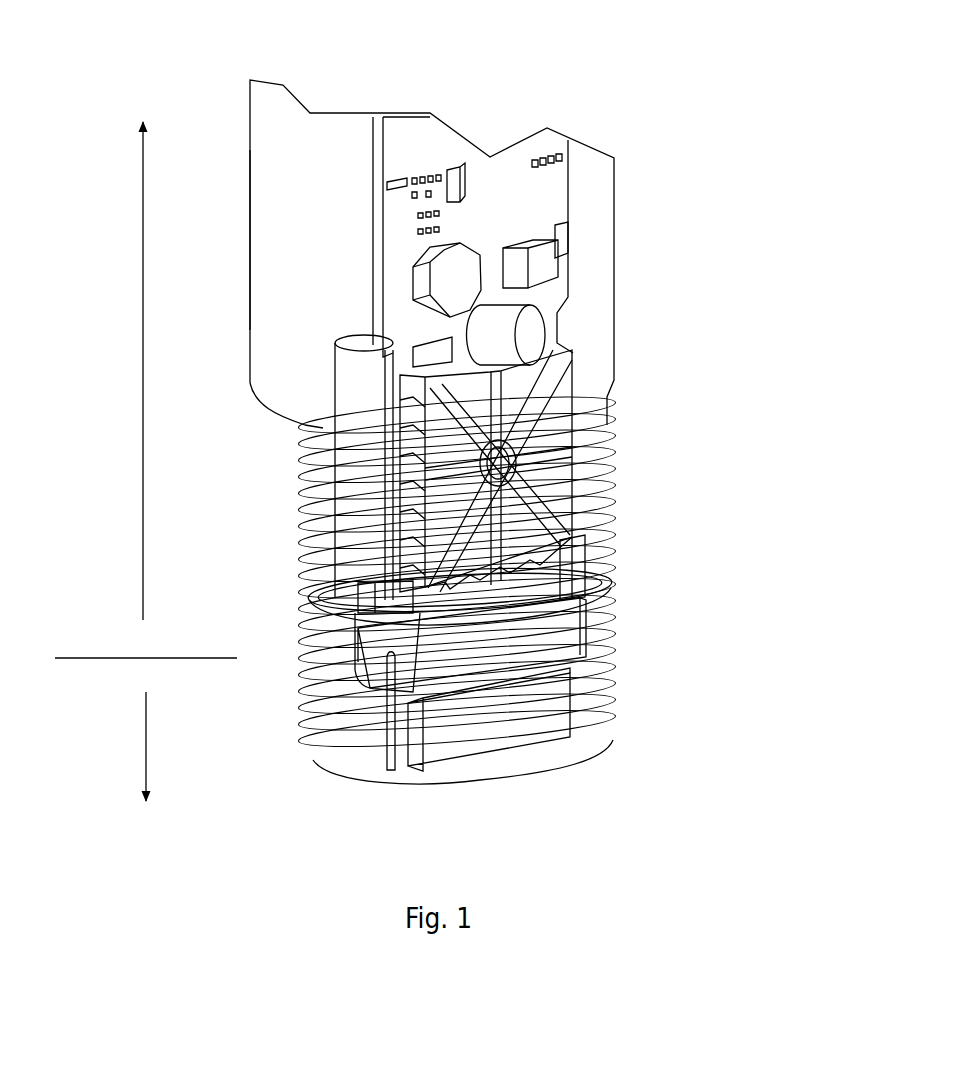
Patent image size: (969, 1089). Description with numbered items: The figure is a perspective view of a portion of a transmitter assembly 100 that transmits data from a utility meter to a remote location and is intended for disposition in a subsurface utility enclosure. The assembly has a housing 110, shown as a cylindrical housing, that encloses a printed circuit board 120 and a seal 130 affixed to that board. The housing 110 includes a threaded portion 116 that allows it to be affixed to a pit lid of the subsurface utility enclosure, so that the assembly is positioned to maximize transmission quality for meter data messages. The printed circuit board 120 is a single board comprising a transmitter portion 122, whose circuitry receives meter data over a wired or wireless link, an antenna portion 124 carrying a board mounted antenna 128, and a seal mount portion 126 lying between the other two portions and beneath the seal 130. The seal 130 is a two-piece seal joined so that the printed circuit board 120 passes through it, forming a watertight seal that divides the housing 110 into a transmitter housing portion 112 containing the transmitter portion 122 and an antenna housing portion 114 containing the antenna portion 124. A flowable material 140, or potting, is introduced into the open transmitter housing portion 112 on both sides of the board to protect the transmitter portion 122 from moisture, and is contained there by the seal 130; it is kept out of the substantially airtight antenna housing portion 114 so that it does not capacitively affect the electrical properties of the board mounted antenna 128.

The transmitter assembly 100 is at (656, 33).
The housing 110 is at (618, 173).
The transmitter housing portion 112 is at (100, 371).
The antenna housing portion 114 is at (102, 746).
The threaded portion 116 is at (293, 676).
The printed circuit board 120 is at (452, 135).
The transmitter portion 122 is at (570, 207).
The antenna portion 124 is at (390, 740).
The seal mount portion 126 is at (613, 603).
The board mounted antenna 128 is at (510, 737).
The seal 130 is at (570, 618).
The flowable material 140 is at (303, 253).